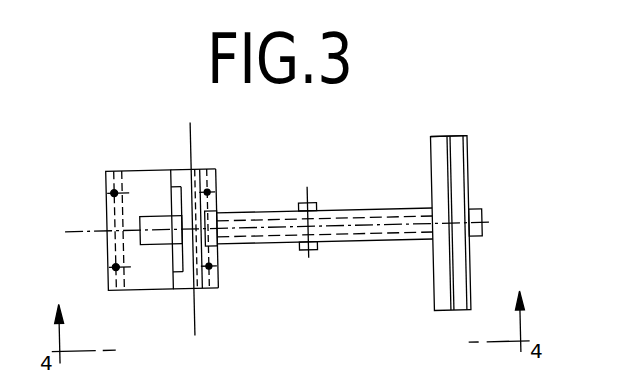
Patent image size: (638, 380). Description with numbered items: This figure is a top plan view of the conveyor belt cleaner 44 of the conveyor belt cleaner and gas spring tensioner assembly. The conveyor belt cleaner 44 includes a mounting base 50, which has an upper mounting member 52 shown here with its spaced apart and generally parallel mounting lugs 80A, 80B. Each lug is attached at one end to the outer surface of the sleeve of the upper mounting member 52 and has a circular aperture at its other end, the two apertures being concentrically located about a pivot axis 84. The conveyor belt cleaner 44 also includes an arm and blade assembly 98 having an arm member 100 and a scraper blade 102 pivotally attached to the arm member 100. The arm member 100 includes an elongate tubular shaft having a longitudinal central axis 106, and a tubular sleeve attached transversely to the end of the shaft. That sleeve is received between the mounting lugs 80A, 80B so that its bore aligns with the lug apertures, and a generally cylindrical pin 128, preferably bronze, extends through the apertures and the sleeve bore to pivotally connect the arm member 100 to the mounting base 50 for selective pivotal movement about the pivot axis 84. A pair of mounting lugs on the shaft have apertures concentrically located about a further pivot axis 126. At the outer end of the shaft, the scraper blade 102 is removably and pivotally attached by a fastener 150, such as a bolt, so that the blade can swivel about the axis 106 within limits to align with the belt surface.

The conveyor belt cleaner 44 is at (116, 145).
The mounting base 50 is at (98, 214).
The upper mounting member 52 is at (107, 255).
The mounting lug 80A is at (212, 169).
The mounting lug 80B is at (201, 293).
The pivot axis 84 is at (197, 142).
The arm and blade assembly 98 is at (408, 143).
The arm member 100 is at (377, 250).
The scraper blade 102 is at (476, 143).
The longitudinal central axis 106 is at (488, 222).
The pivot axis 126 is at (308, 258).
The pin 128 is at (190, 293).
The fastener 150 is at (476, 243).